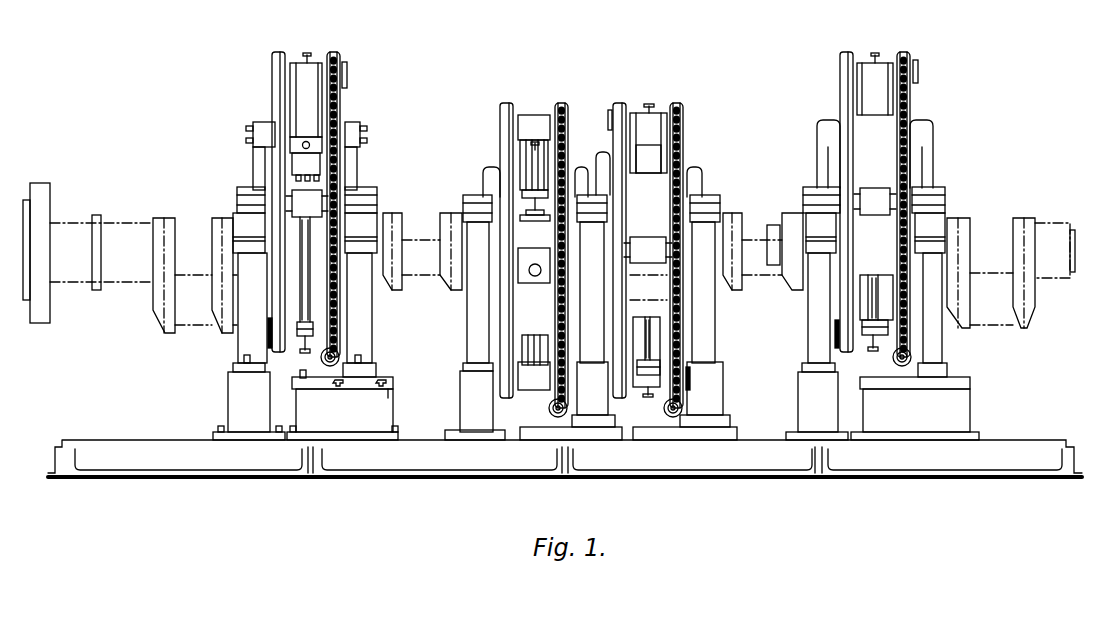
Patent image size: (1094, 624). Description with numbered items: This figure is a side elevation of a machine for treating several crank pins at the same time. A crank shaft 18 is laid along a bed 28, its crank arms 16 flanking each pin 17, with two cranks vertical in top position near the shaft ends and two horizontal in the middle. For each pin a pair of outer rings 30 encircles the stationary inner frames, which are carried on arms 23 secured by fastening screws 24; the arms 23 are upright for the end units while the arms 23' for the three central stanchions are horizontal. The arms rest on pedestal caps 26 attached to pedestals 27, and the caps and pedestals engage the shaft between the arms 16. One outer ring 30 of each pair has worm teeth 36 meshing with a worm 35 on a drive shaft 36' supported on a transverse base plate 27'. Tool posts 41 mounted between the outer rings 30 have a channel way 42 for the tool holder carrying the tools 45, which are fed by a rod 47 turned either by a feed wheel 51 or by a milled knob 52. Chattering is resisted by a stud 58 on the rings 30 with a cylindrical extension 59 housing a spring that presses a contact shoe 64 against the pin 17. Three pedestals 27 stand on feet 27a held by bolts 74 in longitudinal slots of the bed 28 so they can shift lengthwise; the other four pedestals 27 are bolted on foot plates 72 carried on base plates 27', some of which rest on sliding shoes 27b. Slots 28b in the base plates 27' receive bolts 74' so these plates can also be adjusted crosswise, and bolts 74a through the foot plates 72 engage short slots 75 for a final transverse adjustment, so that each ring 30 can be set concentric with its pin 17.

The crank arms 16 is at (215, 235).
The crank pin 17 is at (655, 277).
The crank shaft 18 is at (115, 223).
The arms 23 is at (589, 155).
The arms 23' is at (585, 165).
The fastening screws 24 is at (246, 128).
The pedestal caps 26 is at (237, 195).
The pedestals 27 is at (577, 288).
The base plates 27' is at (614, 437).
The feet 27a is at (533, 393).
The sliding blocks or shoes 27b is at (631, 393).
The bed 28 is at (130, 480).
The slots 28b is at (311, 462).
The outer rings 30 is at (272, 58).
The worm 35 is at (330, 366).
The worm teeth 36 is at (627, 193).
The drive shaft 36' is at (622, 281).
The tool posts 41 is at (300, 70).
The channel way 42 is at (312, 330).
The tools 45 is at (296, 178).
The rod 47 is at (310, 300).
The feed wheel 51 is at (348, 75).
The milled knobs 52 is at (309, 58).
The stud 58 is at (292, 205).
The cylindrical extension 59 is at (528, 160).
The contact shoe 64 is at (528, 212).
The foot plates 72 is at (365, 378).
The bolts 74 is at (303, 471).
The bolts 74' is at (247, 388).
The bolts 74a is at (390, 372).
The short slots 75 is at (393, 395).